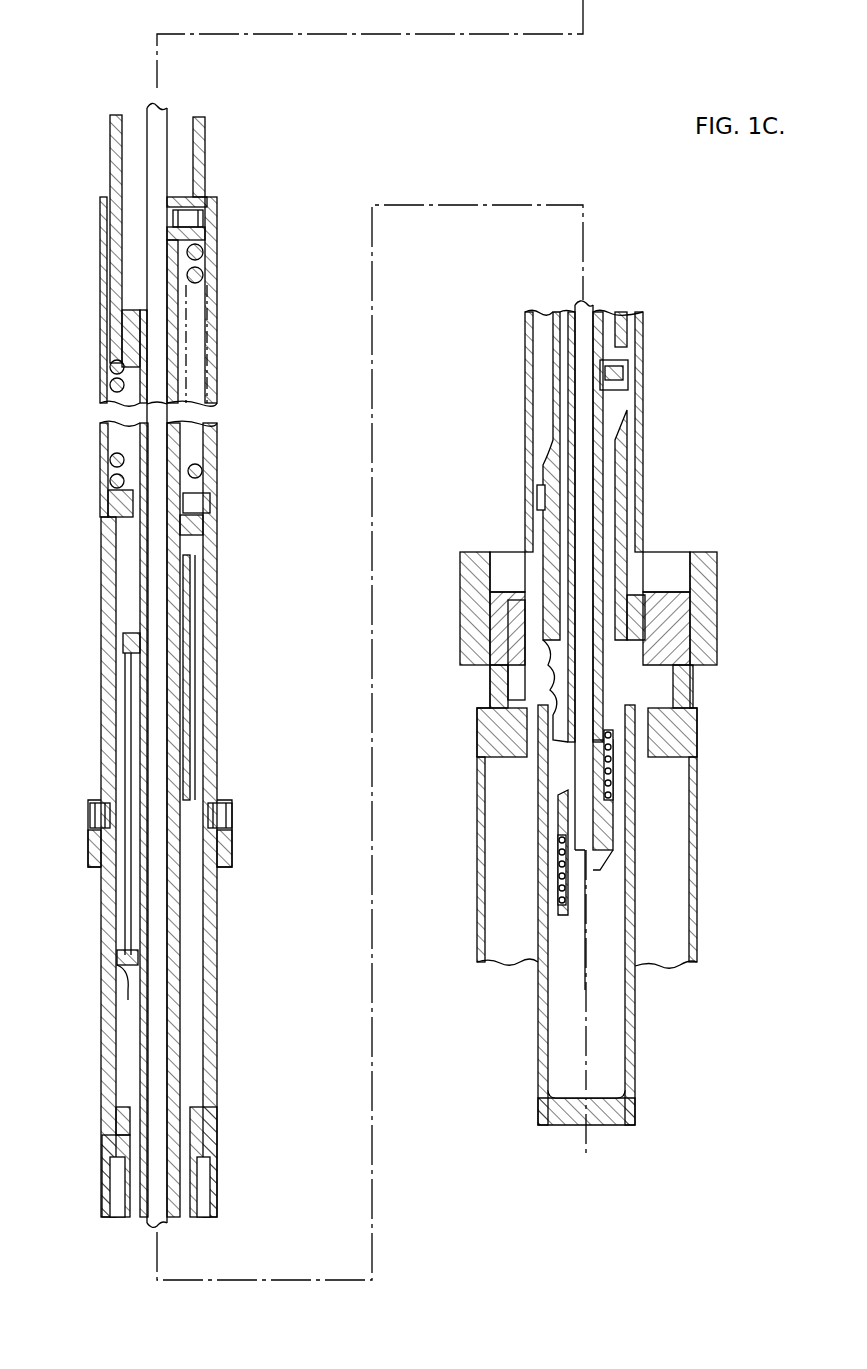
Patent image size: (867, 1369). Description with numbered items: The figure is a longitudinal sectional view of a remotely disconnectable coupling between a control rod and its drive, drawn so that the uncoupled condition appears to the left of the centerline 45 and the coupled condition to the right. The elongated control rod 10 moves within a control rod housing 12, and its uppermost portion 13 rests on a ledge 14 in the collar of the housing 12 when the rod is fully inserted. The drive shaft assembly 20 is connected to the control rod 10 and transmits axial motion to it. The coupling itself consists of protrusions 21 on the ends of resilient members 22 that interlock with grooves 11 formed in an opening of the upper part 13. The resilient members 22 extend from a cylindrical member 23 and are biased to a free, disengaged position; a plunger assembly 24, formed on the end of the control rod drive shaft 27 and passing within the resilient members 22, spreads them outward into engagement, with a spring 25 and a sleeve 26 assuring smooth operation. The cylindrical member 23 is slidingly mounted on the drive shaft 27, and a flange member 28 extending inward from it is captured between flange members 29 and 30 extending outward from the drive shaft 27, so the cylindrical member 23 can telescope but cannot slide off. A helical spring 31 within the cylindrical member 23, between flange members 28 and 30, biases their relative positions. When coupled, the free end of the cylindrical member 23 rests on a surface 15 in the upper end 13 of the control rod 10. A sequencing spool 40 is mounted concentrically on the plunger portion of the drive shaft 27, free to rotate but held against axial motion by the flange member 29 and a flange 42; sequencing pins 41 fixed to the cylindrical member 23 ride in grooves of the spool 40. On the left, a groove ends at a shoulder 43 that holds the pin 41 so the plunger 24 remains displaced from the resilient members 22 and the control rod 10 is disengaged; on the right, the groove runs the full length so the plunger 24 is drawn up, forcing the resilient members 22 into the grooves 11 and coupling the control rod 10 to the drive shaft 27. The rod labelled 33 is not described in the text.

The control rod 10 is at (520, 1156).
The grooves 11 is at (560, 696).
The control rod housing 12 is at (478, 895).
The uppermost portion 13 is at (543, 1115).
The ledge 14 is at (668, 672).
The flange or surface 15 is at (645, 612).
The drive shaft assembly 20 is at (110, 165).
The protrusions 21 is at (560, 695).
The resilient members 22 is at (556, 356).
The cylindrical member 23 is at (108, 1077).
The plunger assembly 24 is at (633, 760).
The spring 25 is at (556, 885).
The sleeve 26 is at (563, 830).
The control rod drive shaft 27 is at (110, 150).
The flange member 28 is at (118, 500).
The flange member 29 is at (125, 641).
The flange member 30 is at (125, 333).
The helical spring 31 is at (205, 270).
The rod 33 is at (163, 163).
The sequencing spool 40 is at (190, 640).
The sequencing pins 41 is at (232, 815).
The flange 42 is at (125, 975).
The shoulder 43 is at (105, 830).
The centerline 45 is at (372, 740).